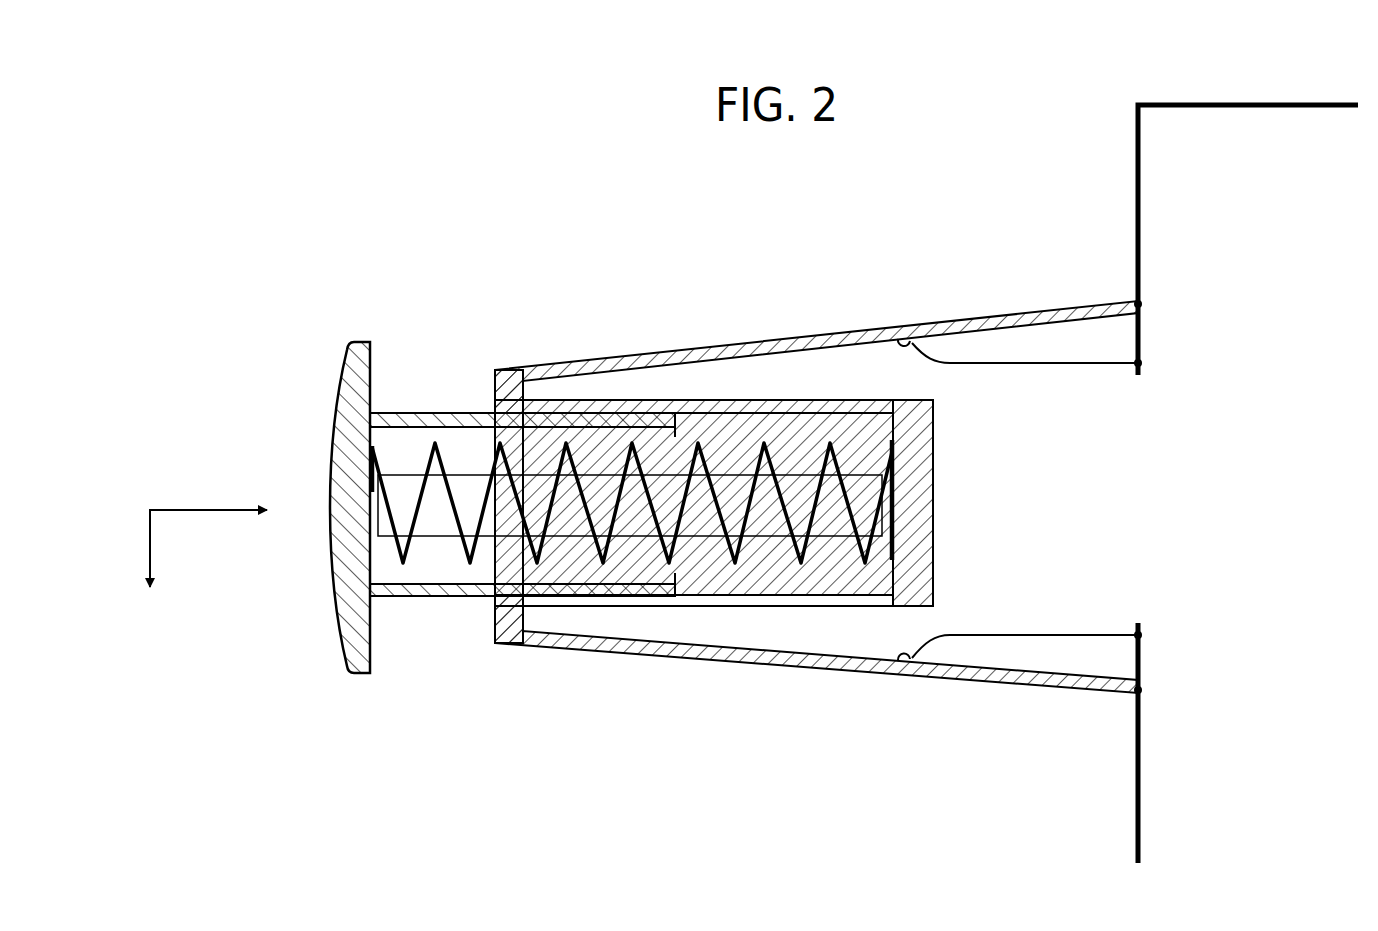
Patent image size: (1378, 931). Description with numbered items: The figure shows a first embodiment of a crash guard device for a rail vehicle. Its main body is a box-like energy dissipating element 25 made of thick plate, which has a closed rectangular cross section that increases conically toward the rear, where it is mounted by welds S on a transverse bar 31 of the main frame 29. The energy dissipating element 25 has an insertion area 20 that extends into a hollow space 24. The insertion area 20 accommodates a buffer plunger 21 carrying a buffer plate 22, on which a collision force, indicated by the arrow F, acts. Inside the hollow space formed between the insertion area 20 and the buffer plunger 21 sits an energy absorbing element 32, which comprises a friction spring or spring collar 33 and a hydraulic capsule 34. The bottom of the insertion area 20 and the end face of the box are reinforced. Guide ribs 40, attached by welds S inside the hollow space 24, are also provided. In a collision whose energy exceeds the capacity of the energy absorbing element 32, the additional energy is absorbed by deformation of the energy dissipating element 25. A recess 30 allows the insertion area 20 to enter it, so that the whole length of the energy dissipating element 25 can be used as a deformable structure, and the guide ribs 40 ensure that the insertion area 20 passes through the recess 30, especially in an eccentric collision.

The insertion area 20 is at (815, 598).
The buffer plunger 21 is at (446, 413).
The buffer plate 22 is at (346, 392).
The hollow space 24 is at (772, 378).
The energy dissipating element 25 is at (725, 660).
The main frame 29 is at (1237, 105).
The recess 30 is at (1140, 483).
The transverse bar 31 is at (1138, 812).
The energy absorbing element 32 is at (600, 448).
The friction spring 33 is at (413, 560).
The hydraulic capsule 34 is at (868, 493).
The guide ribs 40 is at (1052, 345).
The welds S is at (900, 337).
The force direction F is at (208, 528).